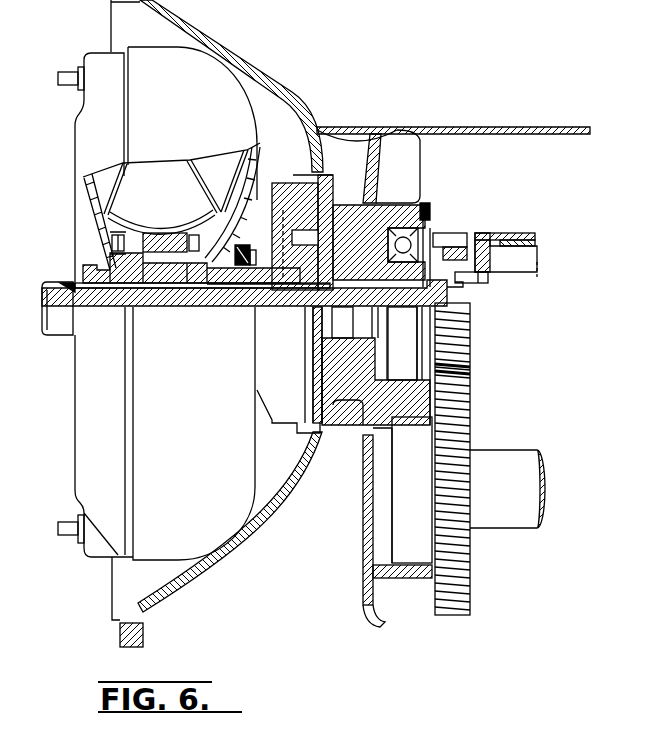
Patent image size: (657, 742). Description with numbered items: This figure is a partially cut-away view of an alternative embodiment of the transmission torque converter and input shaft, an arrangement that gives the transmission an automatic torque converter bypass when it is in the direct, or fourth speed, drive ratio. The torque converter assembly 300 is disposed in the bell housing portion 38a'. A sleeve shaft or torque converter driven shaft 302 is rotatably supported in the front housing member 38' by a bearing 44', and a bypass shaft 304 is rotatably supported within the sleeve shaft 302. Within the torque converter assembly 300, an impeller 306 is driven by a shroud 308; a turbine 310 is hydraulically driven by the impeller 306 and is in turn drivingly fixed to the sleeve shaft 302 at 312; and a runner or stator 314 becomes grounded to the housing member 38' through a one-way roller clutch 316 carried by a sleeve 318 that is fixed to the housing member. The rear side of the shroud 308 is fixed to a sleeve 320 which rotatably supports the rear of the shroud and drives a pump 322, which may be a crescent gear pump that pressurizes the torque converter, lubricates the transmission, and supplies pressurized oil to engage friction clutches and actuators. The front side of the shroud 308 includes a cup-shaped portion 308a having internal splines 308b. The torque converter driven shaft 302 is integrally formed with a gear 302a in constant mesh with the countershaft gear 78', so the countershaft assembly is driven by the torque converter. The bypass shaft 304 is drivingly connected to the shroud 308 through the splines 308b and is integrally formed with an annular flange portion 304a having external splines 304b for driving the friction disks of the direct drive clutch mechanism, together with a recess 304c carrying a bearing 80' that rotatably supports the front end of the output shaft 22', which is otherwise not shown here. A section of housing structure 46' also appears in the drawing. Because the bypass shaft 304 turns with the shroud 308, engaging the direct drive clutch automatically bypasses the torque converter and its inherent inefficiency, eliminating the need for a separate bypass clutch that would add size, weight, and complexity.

The torque converter assembly 300 is at (81, 41).
The shroud 308 is at (81, 101).
The cup-shaped portion 308a is at (65, 334).
The internal splines 308b is at (58, 291).
The bell housing portion 38a' is at (222, 323).
The front housing member 38' is at (453, 110).
The bearing 44' is at (389, 196).
The sleeve shaft 302 is at (160, 287).
The gear 302a is at (455, 233).
The bypass shaft 304 is at (200, 298).
The annular flange portion 304a is at (493, 254).
The external splines 304b is at (520, 230).
The recess 304c is at (472, 284).
The impeller 306 is at (215, 165).
The turbine 310 is at (110, 175).
The turbine-to-sleeve-shaft connection 312 is at (113, 236).
The stator 314 is at (181, 203).
The one-way roller clutch 316 is at (133, 293).
The sleeve 318 is at (283, 282).
The sleeve 320 is at (257, 245).
The pump 322 is at (282, 182).
The bearing 80' is at (488, 311).
The countershaft gear 78' is at (480, 459).
The output shaft 22' is at (511, 506).
The bracket 46' is at (366, 522).